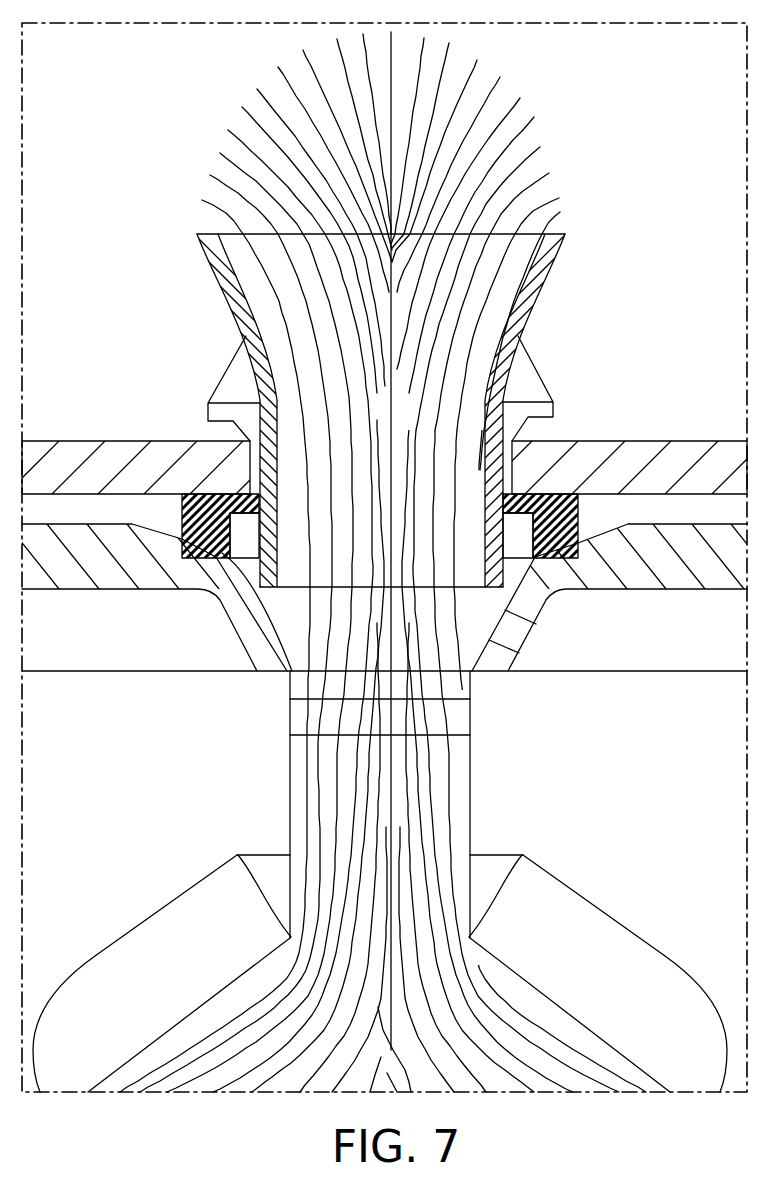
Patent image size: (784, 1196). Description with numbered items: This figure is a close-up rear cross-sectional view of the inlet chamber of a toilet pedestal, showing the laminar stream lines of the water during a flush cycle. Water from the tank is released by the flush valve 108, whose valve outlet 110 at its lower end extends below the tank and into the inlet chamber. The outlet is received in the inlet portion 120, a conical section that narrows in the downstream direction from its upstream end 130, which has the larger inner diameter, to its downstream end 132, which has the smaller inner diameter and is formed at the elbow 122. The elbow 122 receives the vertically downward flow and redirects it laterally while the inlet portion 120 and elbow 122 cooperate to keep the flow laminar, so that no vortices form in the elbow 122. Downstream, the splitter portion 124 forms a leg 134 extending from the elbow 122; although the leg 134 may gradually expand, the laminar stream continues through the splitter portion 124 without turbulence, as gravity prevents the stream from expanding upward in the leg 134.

The flush valve 108 is at (505, 281).
The valve outlet 110 is at (503, 668).
The inlet portion 120 is at (540, 603).
The elbow 122 is at (435, 829).
The splitter portion 124 is at (561, 995).
The upstream end 130 is at (238, 596).
The downstream end 132 is at (332, 670).
The leg 134 is at (153, 1063).